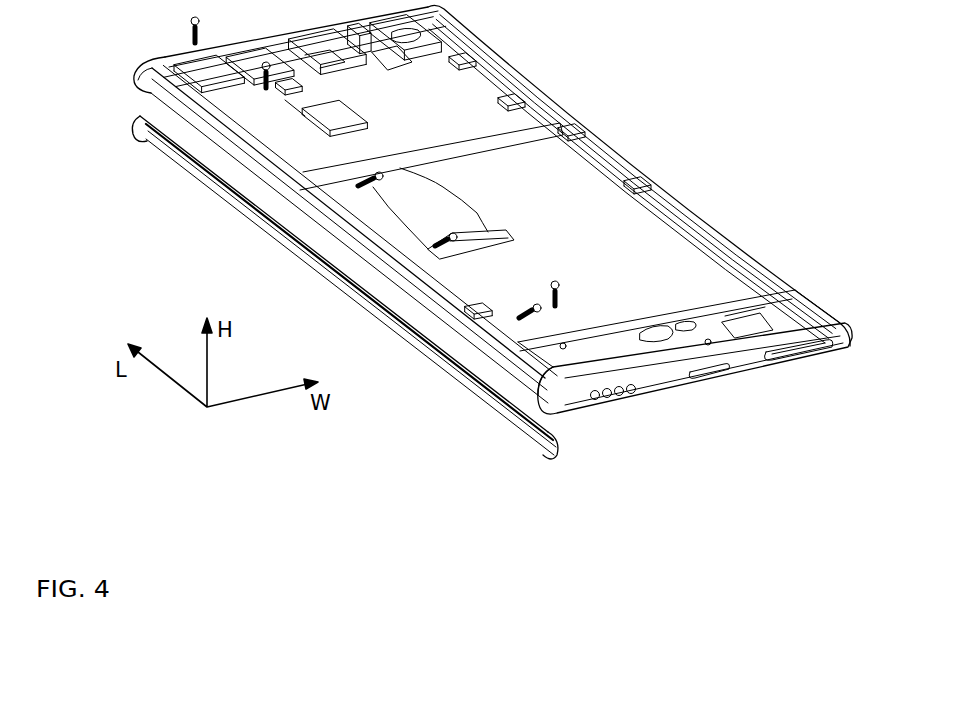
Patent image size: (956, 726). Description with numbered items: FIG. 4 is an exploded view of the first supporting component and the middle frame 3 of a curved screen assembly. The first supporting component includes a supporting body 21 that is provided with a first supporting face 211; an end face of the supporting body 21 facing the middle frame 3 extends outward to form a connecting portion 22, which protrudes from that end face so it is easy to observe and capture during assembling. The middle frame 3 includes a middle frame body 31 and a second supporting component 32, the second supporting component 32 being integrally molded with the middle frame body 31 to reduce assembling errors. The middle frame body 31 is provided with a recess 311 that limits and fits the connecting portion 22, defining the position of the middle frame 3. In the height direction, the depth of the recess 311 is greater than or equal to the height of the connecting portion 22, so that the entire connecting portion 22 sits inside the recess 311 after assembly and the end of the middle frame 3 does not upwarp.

The middle frame 3 is at (802, 365).
The middle frame body 31 is at (673, 381).
The recess 311 is at (540, 387).
The second supporting component 32 is at (753, 260).
The supporting body 21 is at (467, 377).
The first supporting face 211 is at (497, 403).
The connecting portion 22 is at (545, 426).